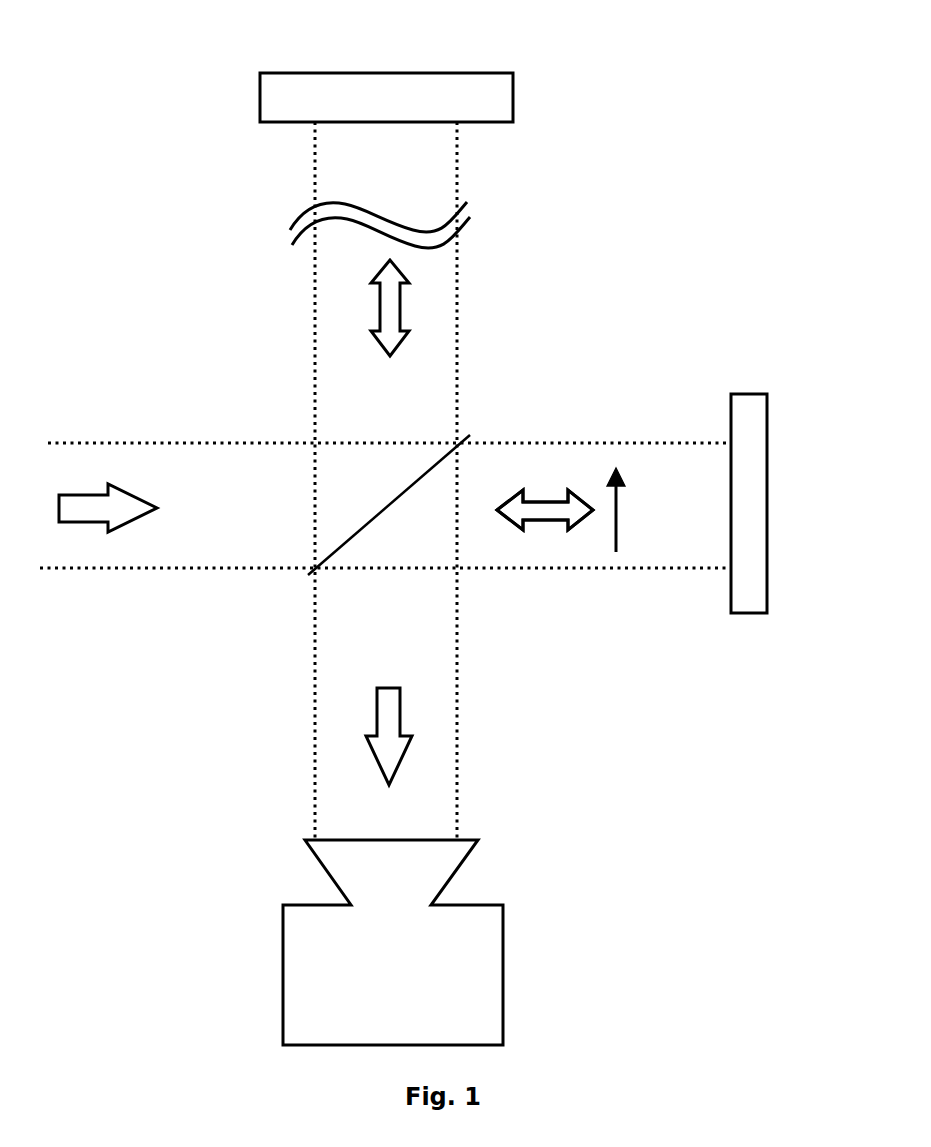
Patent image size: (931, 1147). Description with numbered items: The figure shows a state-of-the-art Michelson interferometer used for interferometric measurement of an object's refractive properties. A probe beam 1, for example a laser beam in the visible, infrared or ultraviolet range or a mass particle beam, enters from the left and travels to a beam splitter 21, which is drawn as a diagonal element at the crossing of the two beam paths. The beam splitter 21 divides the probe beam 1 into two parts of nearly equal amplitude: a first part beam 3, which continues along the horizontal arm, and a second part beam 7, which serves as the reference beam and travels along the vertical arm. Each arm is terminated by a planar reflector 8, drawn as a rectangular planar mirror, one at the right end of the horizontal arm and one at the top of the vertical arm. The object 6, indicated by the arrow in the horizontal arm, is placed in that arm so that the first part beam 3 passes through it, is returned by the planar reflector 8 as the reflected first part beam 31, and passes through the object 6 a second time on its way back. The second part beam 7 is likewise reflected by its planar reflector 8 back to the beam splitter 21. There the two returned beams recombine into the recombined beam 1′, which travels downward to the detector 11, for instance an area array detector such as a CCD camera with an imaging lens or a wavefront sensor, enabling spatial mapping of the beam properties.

The probe beam 1 is at (126, 488).
The recombined beam 1′ is at (377, 697).
The first part beam 3 is at (578, 505).
The object 6 is at (616, 522).
The second part beam 7 is at (395, 345).
The planar reflector 8 is at (480, 73).
The detector 11 is at (487, 905).
The beam splitter 21 is at (470, 435).
The reflected first part beam 31 is at (512, 513).